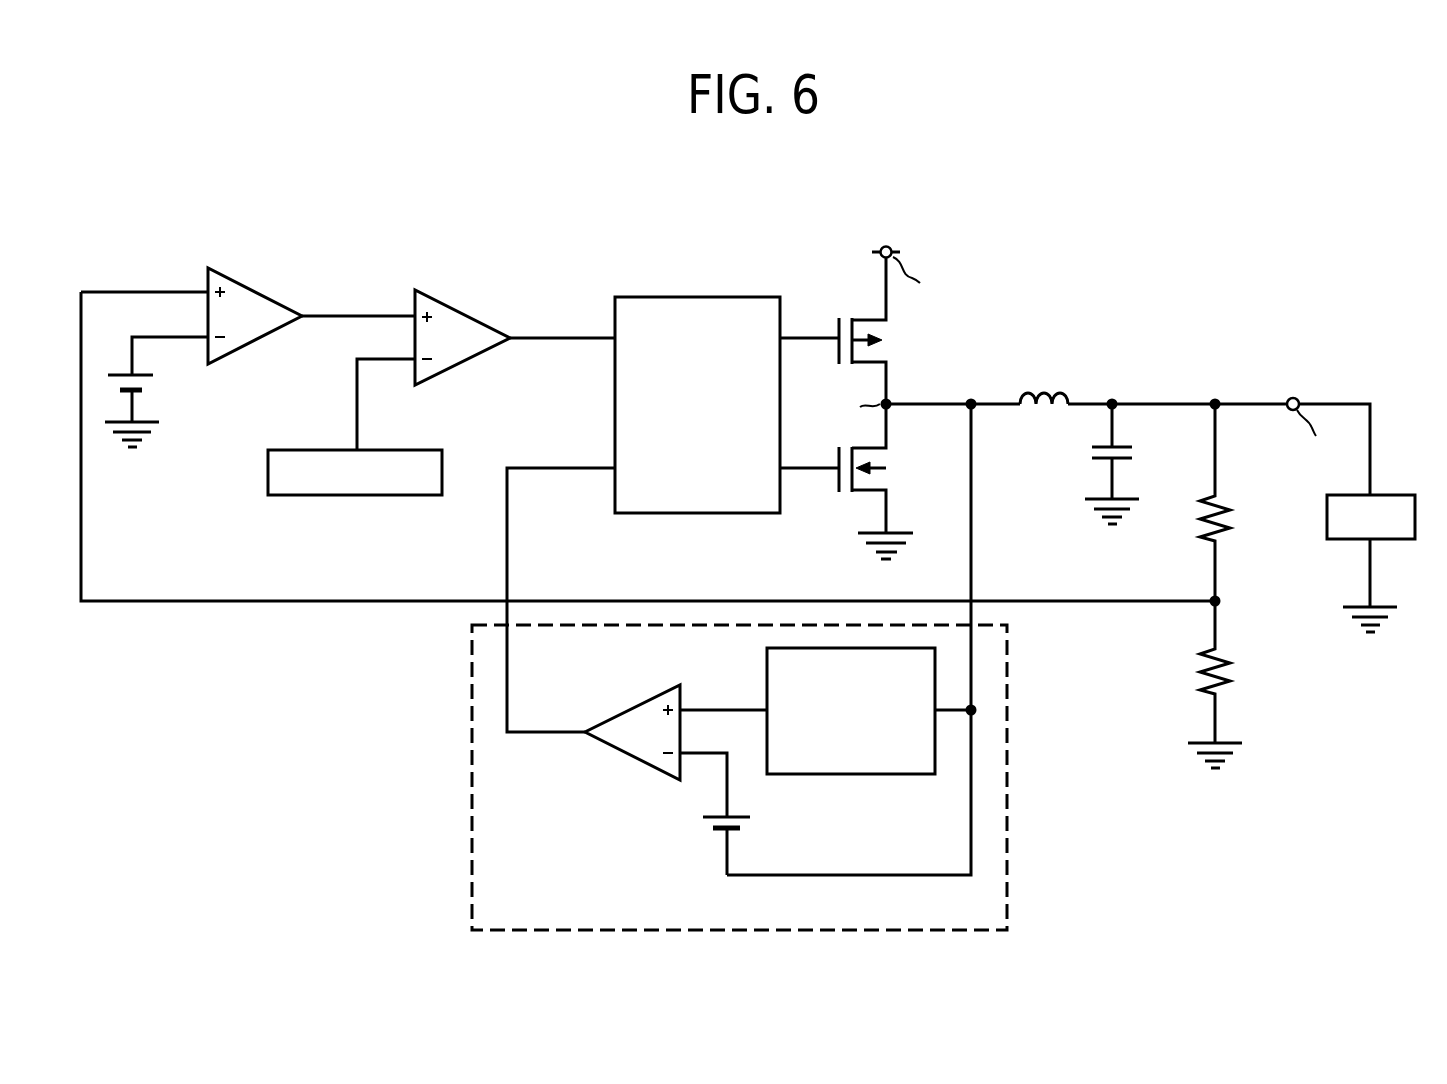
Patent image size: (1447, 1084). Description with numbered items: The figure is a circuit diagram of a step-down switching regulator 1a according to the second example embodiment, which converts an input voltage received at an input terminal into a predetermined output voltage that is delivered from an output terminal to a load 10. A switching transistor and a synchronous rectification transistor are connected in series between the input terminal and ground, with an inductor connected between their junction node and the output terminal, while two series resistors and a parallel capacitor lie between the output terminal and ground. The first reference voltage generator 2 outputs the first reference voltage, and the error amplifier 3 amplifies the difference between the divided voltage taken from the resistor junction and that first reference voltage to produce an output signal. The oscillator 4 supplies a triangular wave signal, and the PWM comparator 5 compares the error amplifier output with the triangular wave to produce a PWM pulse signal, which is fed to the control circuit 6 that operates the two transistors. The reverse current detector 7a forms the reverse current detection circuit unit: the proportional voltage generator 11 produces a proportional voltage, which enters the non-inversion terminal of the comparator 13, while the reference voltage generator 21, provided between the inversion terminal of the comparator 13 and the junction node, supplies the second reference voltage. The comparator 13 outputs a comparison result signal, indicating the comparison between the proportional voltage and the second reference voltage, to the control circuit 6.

The switching regulator 1a is at (1050, 265).
The first reference voltage generator 2 is at (159, 382).
The error amplifier 3 is at (238, 280).
The oscillator 4 is at (398, 497).
The PWM comparator 5 is at (446, 294).
The control circuit 6 is at (736, 295).
The reverse current detector 7a is at (457, 807).
The load 10 is at (1401, 494).
The proportional voltage generator 11 is at (900, 777).
The comparator 13 is at (630, 760).
The reference voltage generator 21 is at (700, 823).